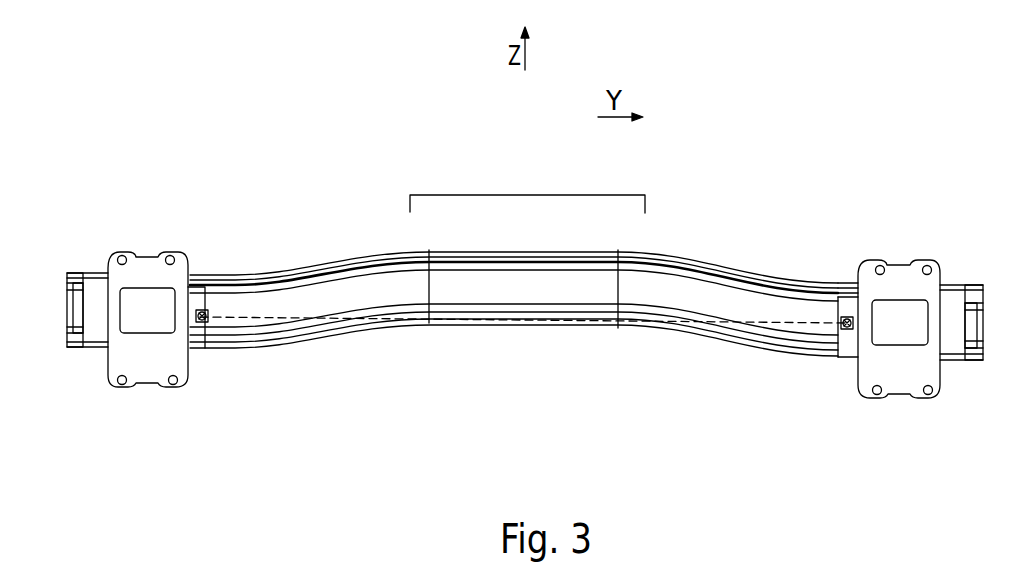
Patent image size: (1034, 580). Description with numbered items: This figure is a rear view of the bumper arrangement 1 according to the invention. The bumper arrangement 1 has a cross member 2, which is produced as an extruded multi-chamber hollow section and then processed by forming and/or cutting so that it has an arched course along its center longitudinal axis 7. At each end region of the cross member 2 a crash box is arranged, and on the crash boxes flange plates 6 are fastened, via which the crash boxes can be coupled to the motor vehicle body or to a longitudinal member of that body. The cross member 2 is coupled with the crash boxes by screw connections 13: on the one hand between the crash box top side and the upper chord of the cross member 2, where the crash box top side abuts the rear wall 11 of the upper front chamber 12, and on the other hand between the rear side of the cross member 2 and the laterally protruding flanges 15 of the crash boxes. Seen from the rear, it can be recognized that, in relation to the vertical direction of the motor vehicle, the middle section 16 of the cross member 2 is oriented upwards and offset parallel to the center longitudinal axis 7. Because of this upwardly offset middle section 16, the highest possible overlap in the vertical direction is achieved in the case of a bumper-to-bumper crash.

The bumper arrangement 1 is at (239, 110).
The cross member 2 is at (751, 306).
The flange plate 6 is at (147, 362).
The center longitudinal axis 7 is at (378, 322).
The rear wall of the upper front chamber 11 is at (83, 280).
The upper front chamber 12 is at (67, 285).
The screw connection 13 is at (202, 322).
The laterally protruding flange 15 is at (850, 305).
The middle section 16 is at (527, 195).